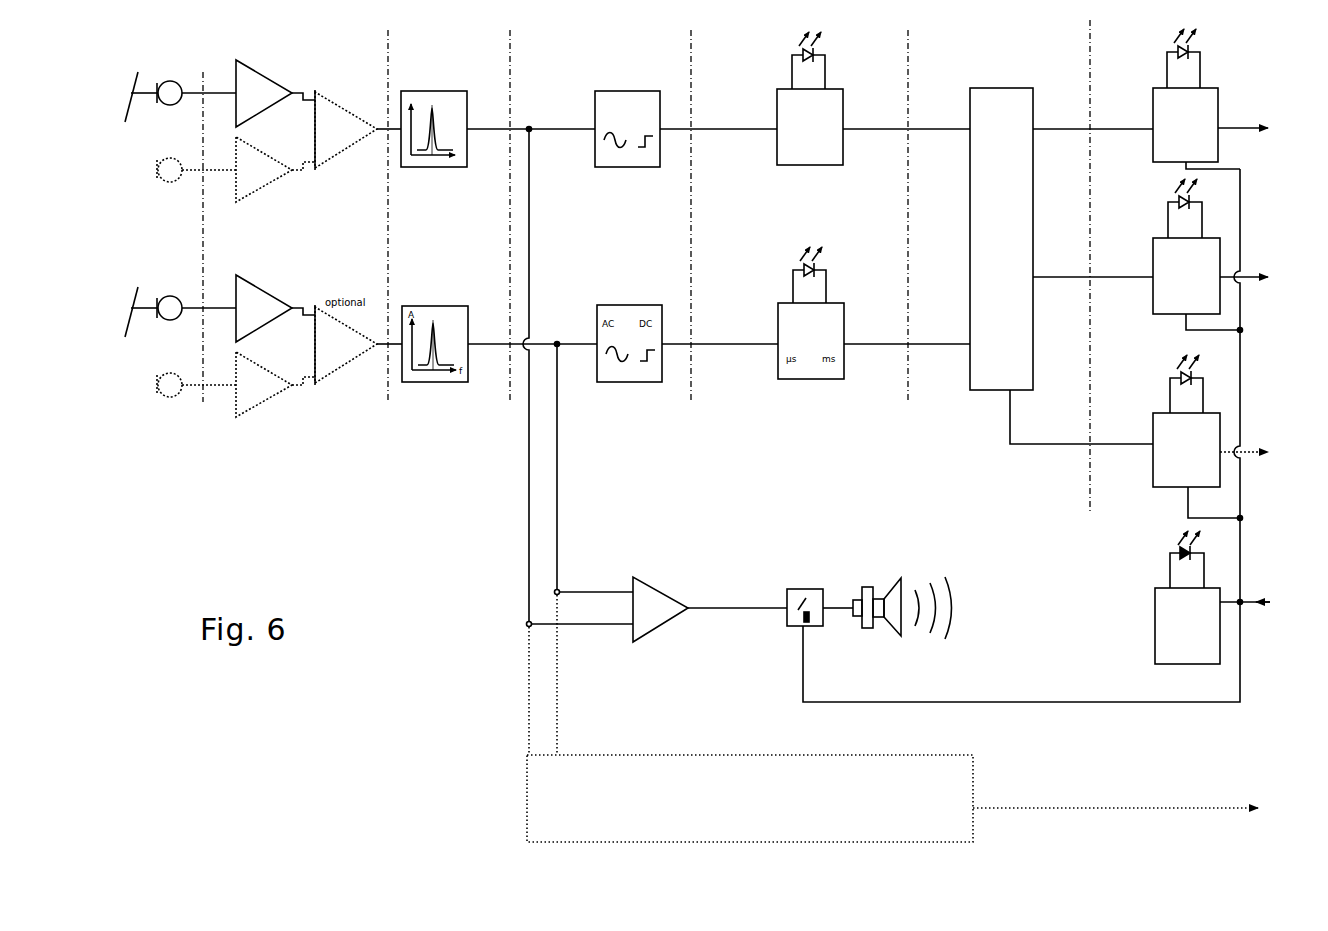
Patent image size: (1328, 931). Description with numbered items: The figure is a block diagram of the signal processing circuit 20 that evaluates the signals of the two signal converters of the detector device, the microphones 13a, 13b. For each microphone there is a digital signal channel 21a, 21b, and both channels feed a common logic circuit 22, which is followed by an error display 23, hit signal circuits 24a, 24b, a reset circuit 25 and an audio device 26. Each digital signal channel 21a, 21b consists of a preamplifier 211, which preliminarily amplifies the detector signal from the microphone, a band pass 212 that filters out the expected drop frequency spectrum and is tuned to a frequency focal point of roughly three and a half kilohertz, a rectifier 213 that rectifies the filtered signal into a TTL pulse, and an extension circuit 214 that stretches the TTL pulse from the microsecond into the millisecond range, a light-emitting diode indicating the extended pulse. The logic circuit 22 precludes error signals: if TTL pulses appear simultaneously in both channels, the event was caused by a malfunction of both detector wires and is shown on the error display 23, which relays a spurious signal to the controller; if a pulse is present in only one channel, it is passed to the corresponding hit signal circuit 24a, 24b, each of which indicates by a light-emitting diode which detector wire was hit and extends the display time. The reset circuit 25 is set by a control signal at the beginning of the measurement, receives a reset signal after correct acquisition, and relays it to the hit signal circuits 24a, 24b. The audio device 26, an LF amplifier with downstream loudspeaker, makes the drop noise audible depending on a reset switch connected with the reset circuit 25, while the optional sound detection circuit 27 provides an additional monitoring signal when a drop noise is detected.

The microphone 13a is at (180, 114).
The microphone 13b is at (180, 327).
The signal processing circuit 20 is at (483, 487).
The preamplifier 211 is at (318, 124).
The band pass 212 is at (436, 116).
The rectifier 213 is at (628, 116).
The extension circuit 214 is at (830, 98).
The digital signal channel 21a is at (753, 156).
The digital signal channel 21b is at (760, 319).
The logic circuit 22 is at (1001, 239).
The error display 23 is at (1199, 438).
The hit signal circuit 24a is at (1210, 99).
The hit signal circuit 24b is at (1193, 256).
The reset circuit 25 is at (1201, 597).
The audio device 26 is at (723, 621).
The sound detection circuit 27 is at (892, 798).